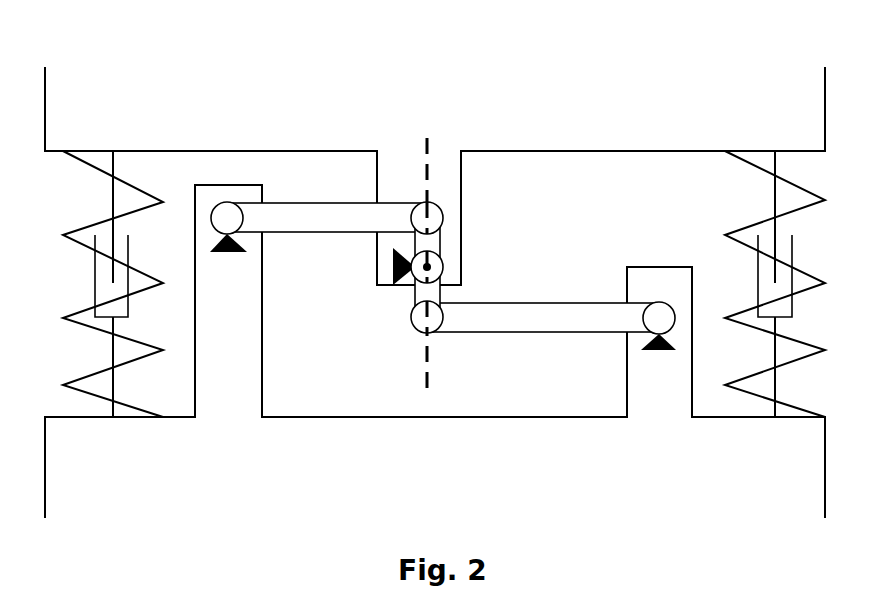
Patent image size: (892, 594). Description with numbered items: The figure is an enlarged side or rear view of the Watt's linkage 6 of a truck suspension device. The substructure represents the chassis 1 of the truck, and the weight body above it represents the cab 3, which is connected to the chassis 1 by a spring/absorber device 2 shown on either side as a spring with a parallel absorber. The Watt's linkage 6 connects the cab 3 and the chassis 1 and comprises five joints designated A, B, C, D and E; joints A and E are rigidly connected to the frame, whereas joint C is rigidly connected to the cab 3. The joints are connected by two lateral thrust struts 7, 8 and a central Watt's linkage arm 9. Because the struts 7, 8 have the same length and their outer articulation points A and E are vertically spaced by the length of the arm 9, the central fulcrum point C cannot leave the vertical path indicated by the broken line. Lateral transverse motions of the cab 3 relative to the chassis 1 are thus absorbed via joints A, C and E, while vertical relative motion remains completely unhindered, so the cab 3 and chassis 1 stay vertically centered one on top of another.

The chassis 1 is at (562, 488).
The spring/absorber device 2 is at (111, 450).
The cab 3 is at (681, 104).
The Watt's linkage 6 is at (443, 247).
The lateral thrust strut 7 is at (298, 215).
The lateral thrust strut 8 is at (547, 318).
The Watt's linkage arm 9 is at (419, 293).